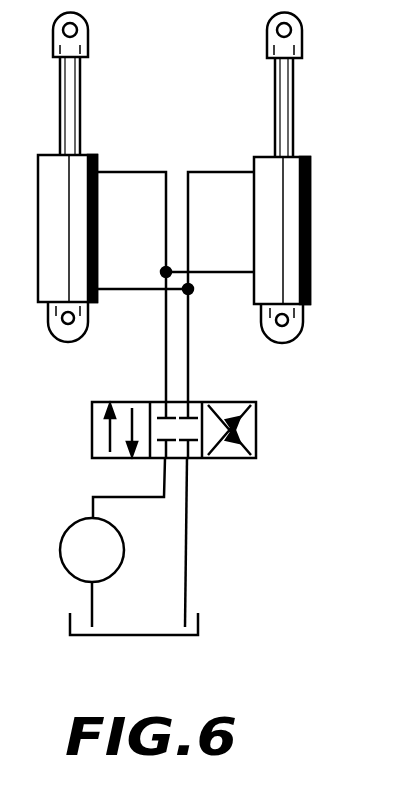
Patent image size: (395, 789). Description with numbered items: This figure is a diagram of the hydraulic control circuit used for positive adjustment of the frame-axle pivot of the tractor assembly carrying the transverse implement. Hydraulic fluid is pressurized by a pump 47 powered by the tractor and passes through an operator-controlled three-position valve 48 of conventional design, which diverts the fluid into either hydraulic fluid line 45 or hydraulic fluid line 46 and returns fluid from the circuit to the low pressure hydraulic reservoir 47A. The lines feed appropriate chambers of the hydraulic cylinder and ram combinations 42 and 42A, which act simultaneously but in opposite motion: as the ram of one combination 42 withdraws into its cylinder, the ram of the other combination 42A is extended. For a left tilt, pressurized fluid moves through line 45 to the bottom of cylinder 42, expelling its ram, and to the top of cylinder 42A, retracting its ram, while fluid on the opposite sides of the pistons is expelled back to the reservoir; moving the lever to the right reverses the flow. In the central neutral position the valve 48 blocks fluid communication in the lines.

The hydraulic cylinder and ram combination 42A is at (80, 170).
The hydraulic cylinder and ram combination 42 is at (288, 226).
The hydraulic fluid line 46 is at (166, 348).
The hydraulic fluid line 45 is at (188, 347).
The three-position valve 48 is at (256, 430).
The pump 47 is at (61, 541).
The low pressure hydraulic reservoir 47A is at (199, 628).